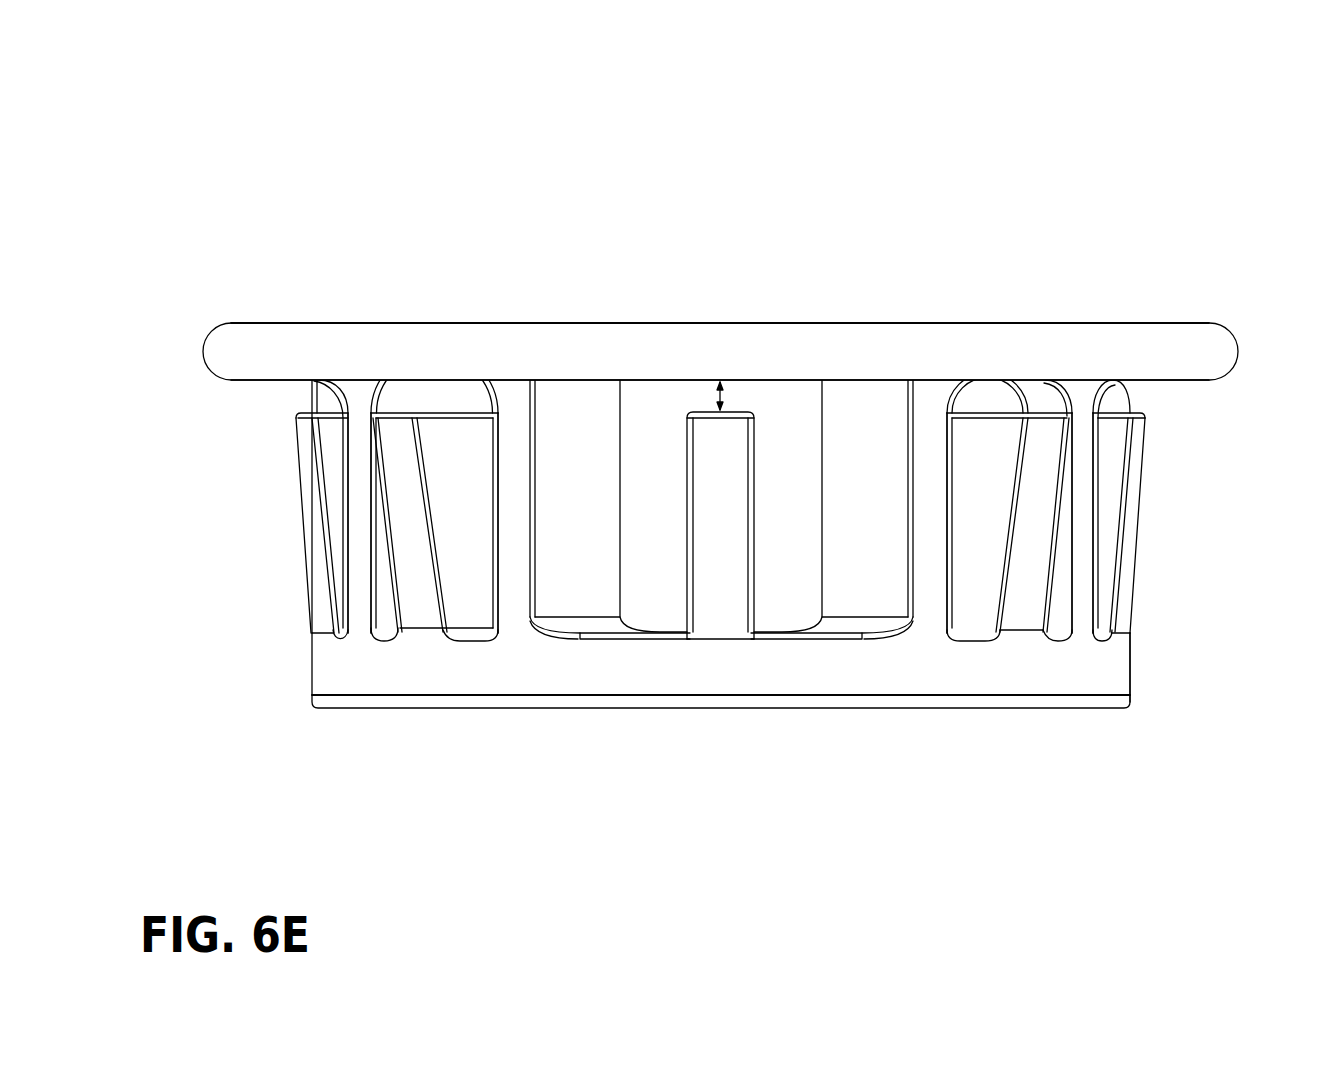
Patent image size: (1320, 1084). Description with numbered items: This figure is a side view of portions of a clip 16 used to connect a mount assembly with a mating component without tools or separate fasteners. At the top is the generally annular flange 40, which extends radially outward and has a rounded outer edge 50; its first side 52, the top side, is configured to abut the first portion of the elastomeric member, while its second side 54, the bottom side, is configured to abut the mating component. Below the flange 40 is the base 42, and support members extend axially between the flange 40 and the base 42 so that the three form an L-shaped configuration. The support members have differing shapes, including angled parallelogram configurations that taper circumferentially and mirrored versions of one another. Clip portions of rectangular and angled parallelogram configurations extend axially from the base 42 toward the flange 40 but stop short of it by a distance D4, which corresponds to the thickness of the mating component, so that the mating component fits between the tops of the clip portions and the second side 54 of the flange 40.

The clip 16 is at (912, 103).
The flange 40 is at (1205, 288).
The base 42 is at (620, 672).
The outer edge 50 is at (203, 345).
The first side 52 is at (252, 323).
The second side 54 is at (259, 381).
The distance D4 is at (722, 398).